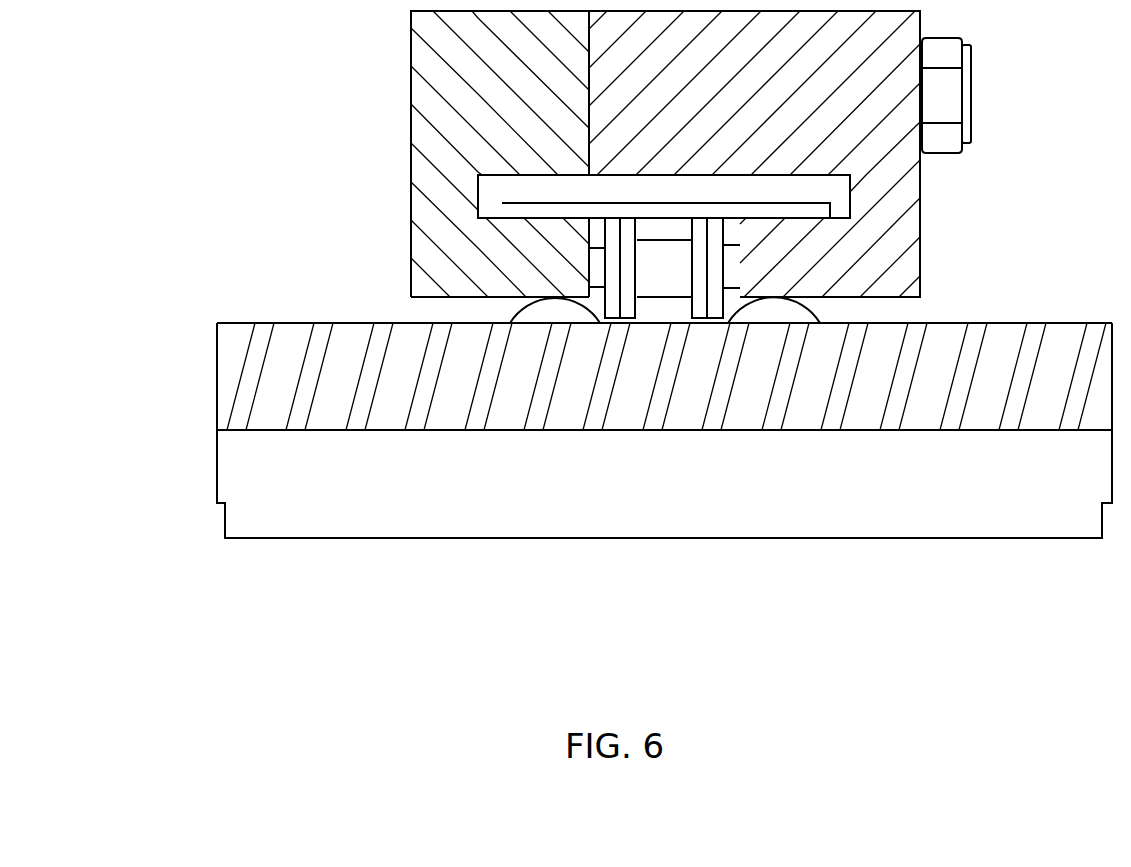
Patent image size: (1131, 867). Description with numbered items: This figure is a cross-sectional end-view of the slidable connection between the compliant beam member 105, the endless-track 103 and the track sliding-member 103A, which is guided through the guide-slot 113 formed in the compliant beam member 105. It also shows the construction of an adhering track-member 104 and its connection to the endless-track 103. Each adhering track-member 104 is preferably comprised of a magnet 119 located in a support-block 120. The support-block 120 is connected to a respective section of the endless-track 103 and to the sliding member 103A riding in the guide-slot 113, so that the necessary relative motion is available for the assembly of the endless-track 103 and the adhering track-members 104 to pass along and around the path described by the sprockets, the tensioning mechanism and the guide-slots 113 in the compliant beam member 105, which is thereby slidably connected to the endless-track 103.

The compliant beam 105 is at (410, 53).
The track sliding-member 103A is at (657, 237).
The endless track 103 is at (653, 260).
The guide-slot 113 is at (732, 237).
The support-block 120 is at (290, 322).
The adhering track-member 104 is at (395, 538).
The magnet 119 is at (632, 517).